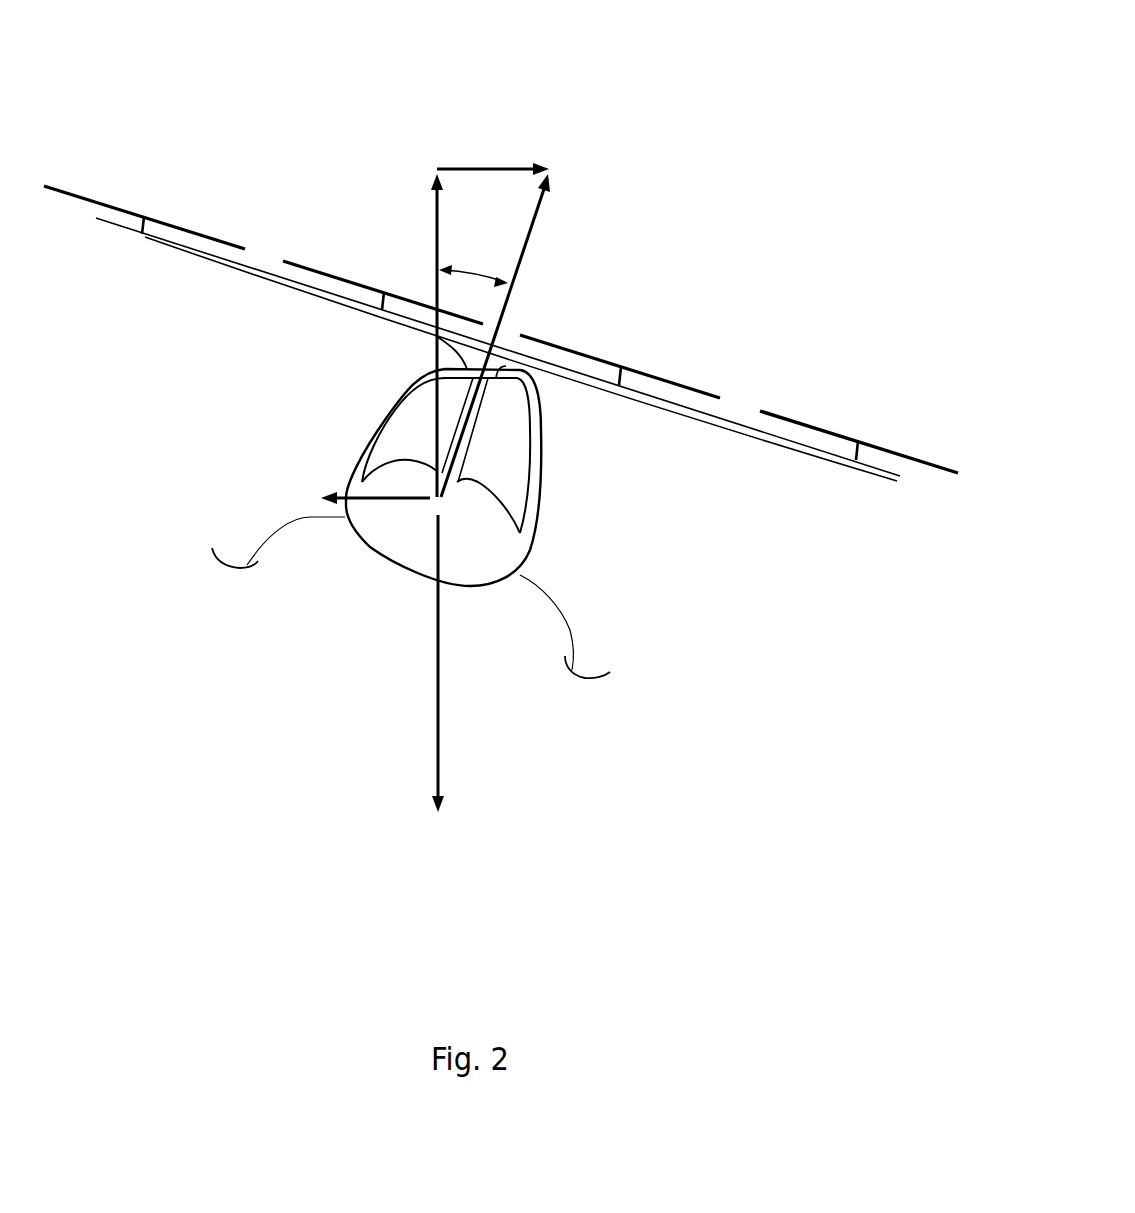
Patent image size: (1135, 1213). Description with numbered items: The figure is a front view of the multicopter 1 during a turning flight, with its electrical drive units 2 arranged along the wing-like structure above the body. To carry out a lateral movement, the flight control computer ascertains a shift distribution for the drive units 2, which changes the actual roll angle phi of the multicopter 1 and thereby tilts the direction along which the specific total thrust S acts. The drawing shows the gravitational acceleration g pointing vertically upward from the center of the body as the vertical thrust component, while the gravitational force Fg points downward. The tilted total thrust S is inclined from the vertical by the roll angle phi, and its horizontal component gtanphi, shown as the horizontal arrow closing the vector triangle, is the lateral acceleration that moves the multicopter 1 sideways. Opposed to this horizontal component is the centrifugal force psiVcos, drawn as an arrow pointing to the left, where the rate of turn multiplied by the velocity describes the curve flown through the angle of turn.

The multicopter 1 is at (690, 74).
The electrical drive units 2 is at (633, 368).
The gravitational acceleration g is at (432, 235).
The gravitational force Fg is at (435, 692).
The centrifugal force component psiVcos is at (345, 492).
The total thrust S is at (542, 213).
The horizontal thrust component gtanphi is at (503, 168).
The roll angle phi is at (480, 270).